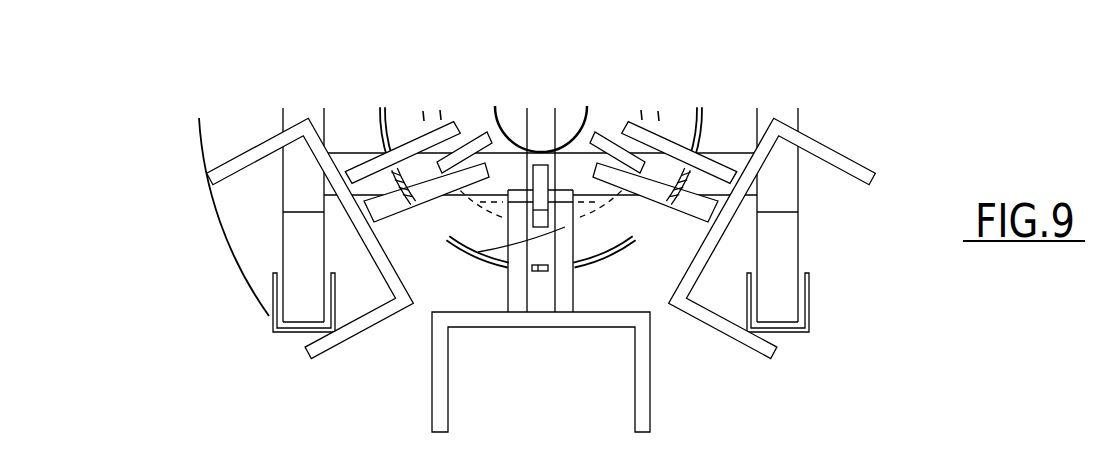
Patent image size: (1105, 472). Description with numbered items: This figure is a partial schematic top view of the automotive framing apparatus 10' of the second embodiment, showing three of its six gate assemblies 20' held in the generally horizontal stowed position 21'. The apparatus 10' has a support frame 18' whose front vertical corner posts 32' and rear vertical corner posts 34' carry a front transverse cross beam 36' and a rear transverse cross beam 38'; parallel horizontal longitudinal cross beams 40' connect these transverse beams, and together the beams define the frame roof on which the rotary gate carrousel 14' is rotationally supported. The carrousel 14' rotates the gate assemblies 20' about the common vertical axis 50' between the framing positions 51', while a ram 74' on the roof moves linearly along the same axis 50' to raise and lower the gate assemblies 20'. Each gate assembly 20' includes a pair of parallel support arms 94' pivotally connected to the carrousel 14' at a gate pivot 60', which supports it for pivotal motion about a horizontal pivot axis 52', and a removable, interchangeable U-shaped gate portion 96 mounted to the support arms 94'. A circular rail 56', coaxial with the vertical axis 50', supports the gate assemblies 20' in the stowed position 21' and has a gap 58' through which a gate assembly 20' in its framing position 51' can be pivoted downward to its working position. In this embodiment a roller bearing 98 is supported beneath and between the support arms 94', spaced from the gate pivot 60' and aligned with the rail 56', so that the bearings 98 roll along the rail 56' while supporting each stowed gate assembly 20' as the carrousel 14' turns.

The roller bearing 98 is at (670, 238).
The ram 74' is at (545, 272).
The common vertical axis 50' is at (550, 192).
The rotary gate carrousel 14' is at (540, 113).
The gate assembly 20' is at (532, 253).
The horizontal longitudinal cross beams 40' is at (686, 140).
The U-shaped gate portion 96 is at (806, 134).
The rear transverse cross beam 38' is at (278, 215).
The stowed position 21' is at (539, 217).
The front transverse cross beam 36' is at (803, 195).
The support frame 18' is at (822, 215).
The automotive framing apparatus 10' is at (829, 290).
The rear vertical corner posts 34' is at (270, 302).
The front vertical corner posts 32' is at (806, 302).
The horizontal pivot axis 52' is at (528, 221).
The gate pivot 60' is at (485, 221).
The gap 58' is at (504, 282).
The circular rail 56' is at (617, 266).
The support arms 94' is at (540, 276).
The framing position 51' is at (541, 375).